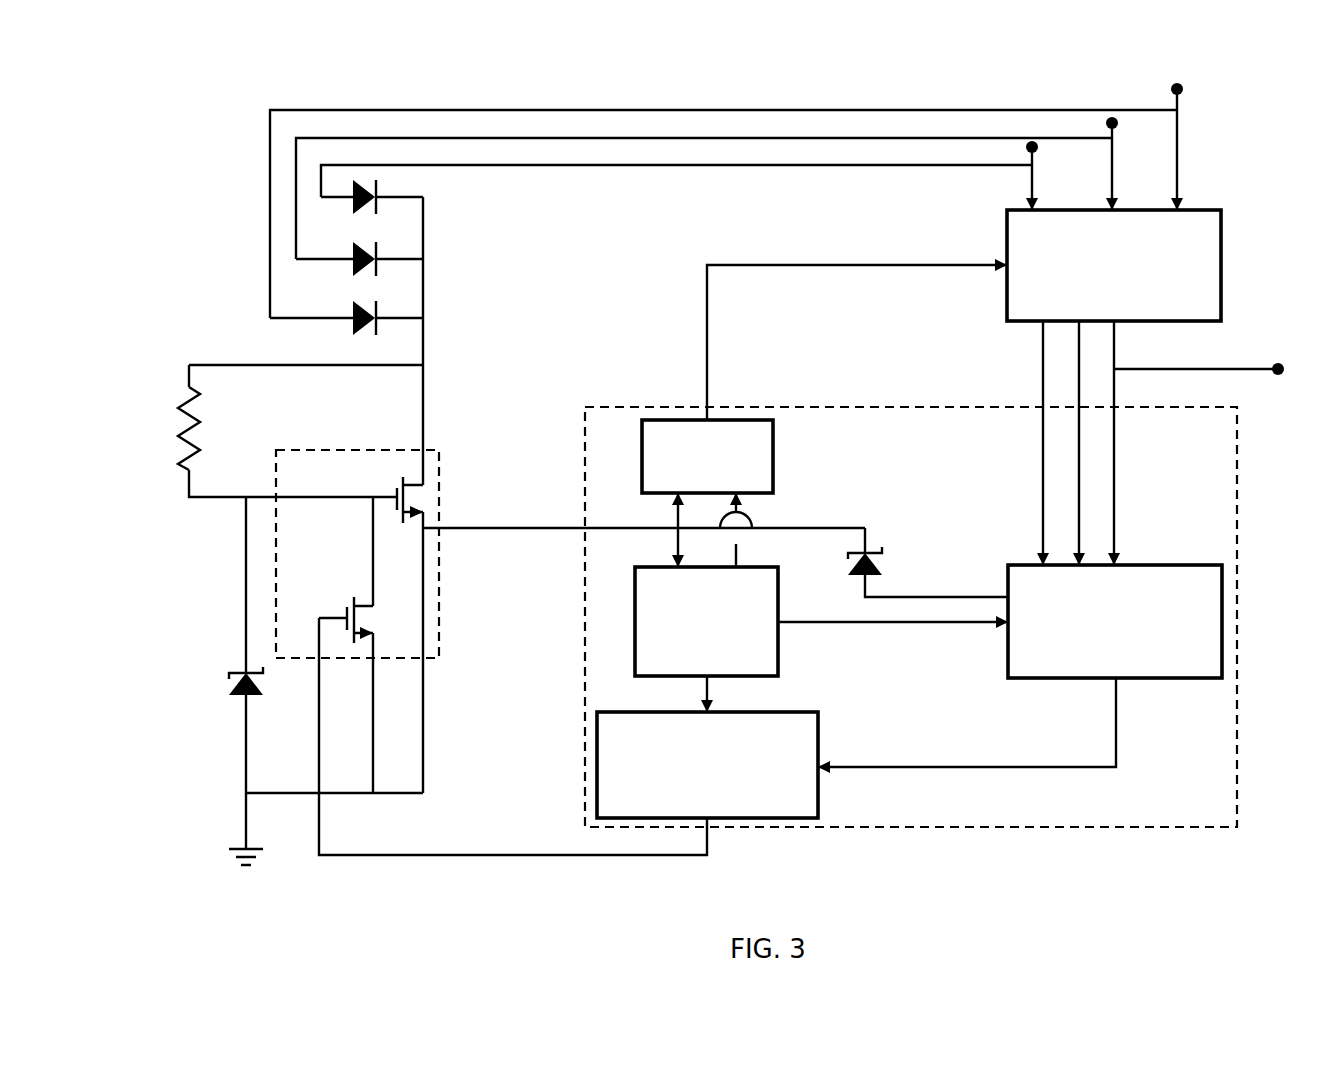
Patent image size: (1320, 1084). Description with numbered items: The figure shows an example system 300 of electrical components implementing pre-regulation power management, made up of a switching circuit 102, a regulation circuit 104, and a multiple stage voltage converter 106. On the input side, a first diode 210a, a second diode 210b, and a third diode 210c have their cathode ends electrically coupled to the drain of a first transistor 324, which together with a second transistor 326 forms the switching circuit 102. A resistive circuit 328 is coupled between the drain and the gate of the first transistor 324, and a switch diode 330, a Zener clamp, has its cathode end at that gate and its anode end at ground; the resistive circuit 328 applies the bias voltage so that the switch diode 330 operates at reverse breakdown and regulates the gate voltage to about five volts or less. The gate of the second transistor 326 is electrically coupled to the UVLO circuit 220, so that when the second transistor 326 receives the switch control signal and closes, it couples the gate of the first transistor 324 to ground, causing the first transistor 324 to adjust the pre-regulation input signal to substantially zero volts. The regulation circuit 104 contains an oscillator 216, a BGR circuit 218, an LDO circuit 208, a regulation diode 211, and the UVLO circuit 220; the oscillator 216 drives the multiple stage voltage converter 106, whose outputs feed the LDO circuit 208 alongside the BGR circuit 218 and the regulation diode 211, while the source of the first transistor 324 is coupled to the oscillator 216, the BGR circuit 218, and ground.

The system 300 is at (235, 68).
The first diode 210a is at (368, 332).
The second diode 210b is at (368, 272).
The third diode 210c is at (368, 212).
The resistive circuit 328 is at (182, 462).
The switch diode 330 is at (226, 690).
The switching circuit 102 is at (277, 450).
The first transistor 324 is at (398, 490).
The second transistor 326 is at (351, 602).
The regulation circuit 104 is at (585, 448).
The multiple stage voltage converter 106 is at (1096, 305).
The oscillator 216 is at (689, 481).
The BGR circuit 218 is at (757, 661).
The UVLO circuit 220 is at (689, 806).
The LDO circuit 208 is at (1182, 648).
The regulation diode 211 is at (882, 566).